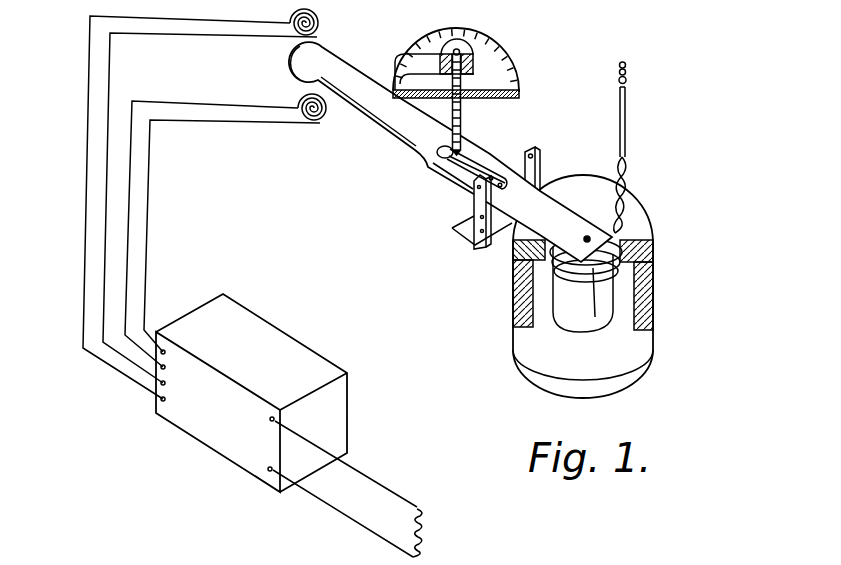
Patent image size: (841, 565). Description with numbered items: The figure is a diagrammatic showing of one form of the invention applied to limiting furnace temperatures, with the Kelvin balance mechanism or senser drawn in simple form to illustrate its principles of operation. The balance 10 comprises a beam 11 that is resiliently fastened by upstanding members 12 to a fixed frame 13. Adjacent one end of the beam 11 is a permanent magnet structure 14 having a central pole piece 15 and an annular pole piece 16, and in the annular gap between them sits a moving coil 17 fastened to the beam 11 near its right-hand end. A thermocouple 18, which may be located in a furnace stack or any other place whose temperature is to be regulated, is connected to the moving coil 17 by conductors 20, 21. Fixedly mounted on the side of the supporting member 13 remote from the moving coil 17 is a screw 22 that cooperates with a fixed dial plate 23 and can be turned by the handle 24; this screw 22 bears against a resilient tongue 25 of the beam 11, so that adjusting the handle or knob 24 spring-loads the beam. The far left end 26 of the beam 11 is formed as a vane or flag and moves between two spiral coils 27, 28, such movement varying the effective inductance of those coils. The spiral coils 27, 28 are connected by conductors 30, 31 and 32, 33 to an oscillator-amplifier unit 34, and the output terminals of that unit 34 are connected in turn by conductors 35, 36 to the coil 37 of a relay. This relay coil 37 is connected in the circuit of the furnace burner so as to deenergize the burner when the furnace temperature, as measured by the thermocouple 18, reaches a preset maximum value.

The balance 10 is at (508, 148).
The beam 11 is at (400, 139).
The upstanding members 12 is at (473, 198).
The fixed frame 13 is at (470, 248).
The permanent magnet structure 14 is at (653, 282).
The central pole piece 15 is at (568, 322).
The annular pole piece 16 is at (651, 218).
The moving coil 17 is at (595, 318).
The thermocouple 18 is at (627, 78).
The conductor 20 is at (619, 146).
The conductor 21 is at (626, 116).
The screw 22 is at (461, 112).
The fixed dial plate 23 is at (504, 47).
The handle 24 is at (403, 52).
The resilient tongue 25 is at (433, 166).
The far left end 26 is at (289, 65).
The spiral coil 27 is at (321, 20).
The spiral coil 28 is at (323, 123).
The conductor 30 is at (85, 212).
The conductor 31 is at (107, 235).
The conductor 32 is at (130, 212).
The conductor 33 is at (147, 239).
The oscillator-amplifier unit 34 is at (272, 334).
The conductor 35 is at (365, 477).
The conductor 36 is at (343, 520).
The relay coil 37 is at (424, 527).